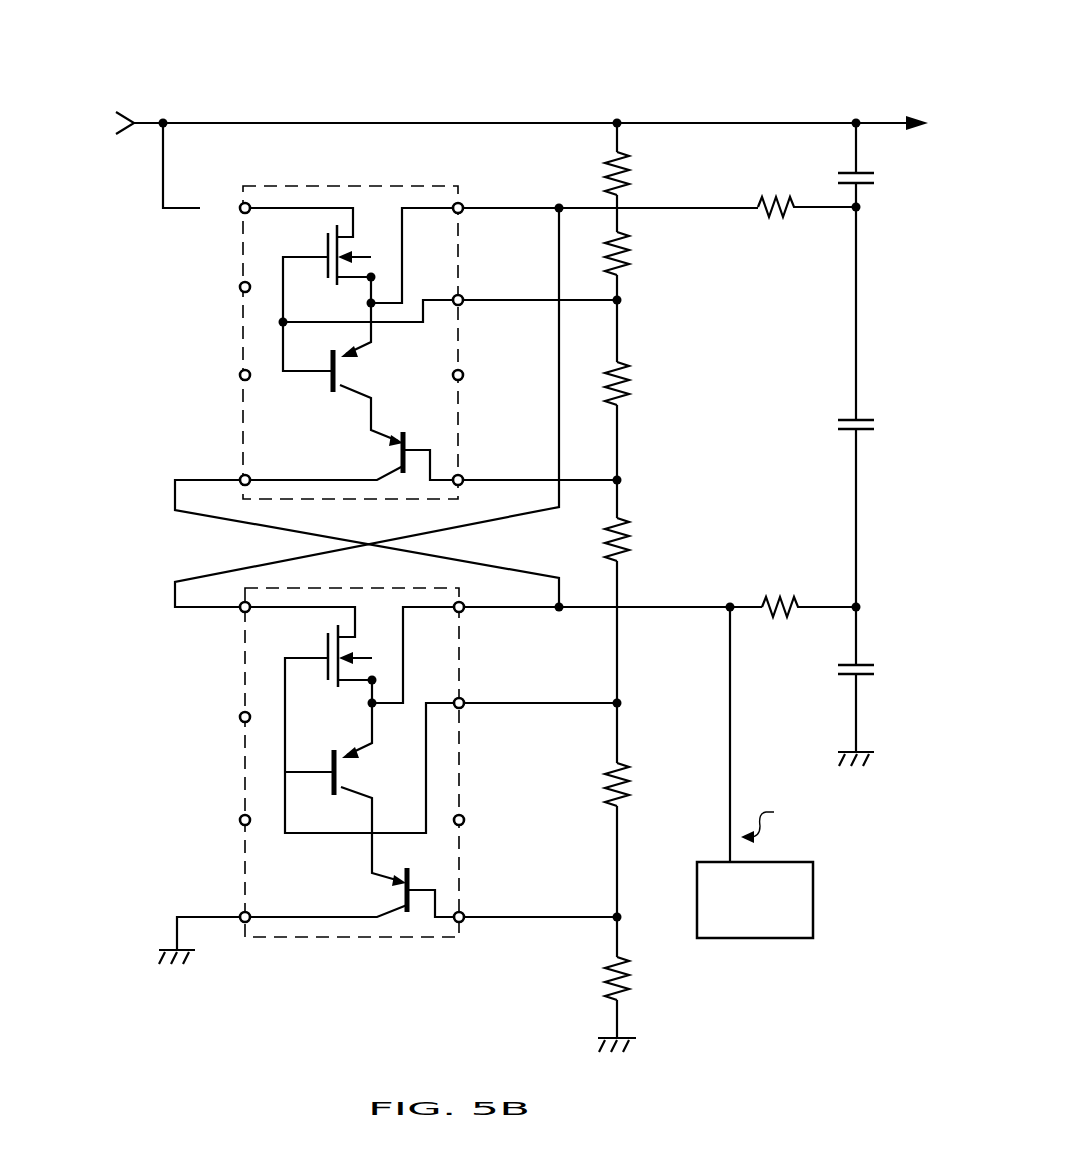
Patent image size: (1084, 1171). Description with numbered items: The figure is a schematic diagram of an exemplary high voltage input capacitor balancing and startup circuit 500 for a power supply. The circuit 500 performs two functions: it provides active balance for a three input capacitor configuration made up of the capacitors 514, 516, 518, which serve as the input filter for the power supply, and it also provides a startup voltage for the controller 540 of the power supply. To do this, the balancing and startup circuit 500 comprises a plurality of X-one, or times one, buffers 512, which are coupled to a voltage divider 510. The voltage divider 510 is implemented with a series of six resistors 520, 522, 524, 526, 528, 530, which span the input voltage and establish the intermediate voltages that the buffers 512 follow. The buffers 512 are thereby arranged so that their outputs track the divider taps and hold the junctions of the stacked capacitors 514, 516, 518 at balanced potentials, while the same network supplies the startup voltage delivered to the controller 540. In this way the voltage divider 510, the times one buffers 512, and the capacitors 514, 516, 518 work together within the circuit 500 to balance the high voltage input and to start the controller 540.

The high voltage input capacitor balancing and startup circuit 500 is at (814, 46).
The voltage divider 510 is at (698, 338).
The X1 buffer 512 is at (242, 232).
The capacitor 514 is at (863, 172).
The capacitor 516 is at (863, 418).
The capacitor 518 is at (863, 664).
The resistor 520 is at (620, 167).
The resistor 522 is at (620, 245).
The resistor 524 is at (620, 373).
The resistor 526 is at (620, 533).
The resistor 528 is at (623, 778).
The resistor 530 is at (623, 968).
The controller 540 is at (802, 958).